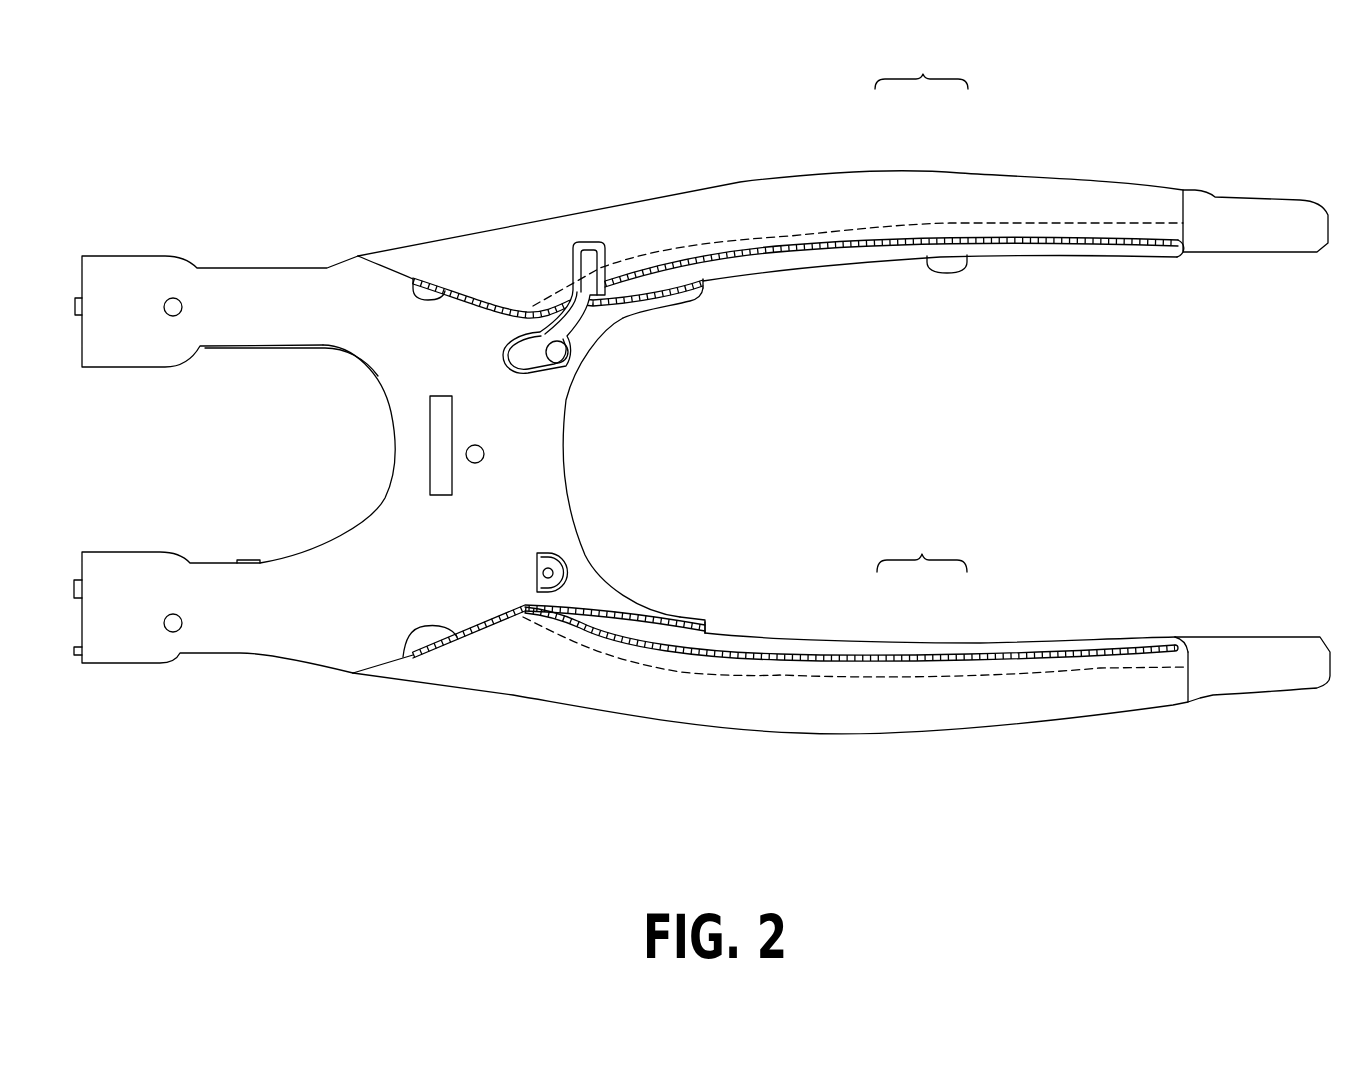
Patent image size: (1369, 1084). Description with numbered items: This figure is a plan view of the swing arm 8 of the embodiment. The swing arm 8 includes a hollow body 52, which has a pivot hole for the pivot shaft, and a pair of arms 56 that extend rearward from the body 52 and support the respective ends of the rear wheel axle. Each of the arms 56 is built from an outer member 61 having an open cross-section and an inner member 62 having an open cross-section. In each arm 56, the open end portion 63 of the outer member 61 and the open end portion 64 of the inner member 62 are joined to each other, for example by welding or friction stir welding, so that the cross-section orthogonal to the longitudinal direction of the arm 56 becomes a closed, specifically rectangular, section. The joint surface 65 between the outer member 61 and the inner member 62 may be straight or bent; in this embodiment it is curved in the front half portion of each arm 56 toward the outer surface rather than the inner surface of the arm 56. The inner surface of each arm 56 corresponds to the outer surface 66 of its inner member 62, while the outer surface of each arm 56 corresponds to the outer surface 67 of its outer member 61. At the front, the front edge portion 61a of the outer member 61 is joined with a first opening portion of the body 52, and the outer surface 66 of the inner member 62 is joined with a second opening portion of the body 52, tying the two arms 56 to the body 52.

The swing arm 8 is at (663, 166).
The body 52 is at (288, 268).
The arms 56 is at (921, 305).
The outer member 61 is at (894, 173).
The front edge portion 61a is at (403, 278).
The inner member 62 is at (953, 257).
The open end portion 63 is at (710, 262).
The open end portion 64 is at (1077, 222).
The joint surface 65 is at (780, 258).
The outer surface 66 is at (642, 298).
The outer surface 67 is at (773, 178).